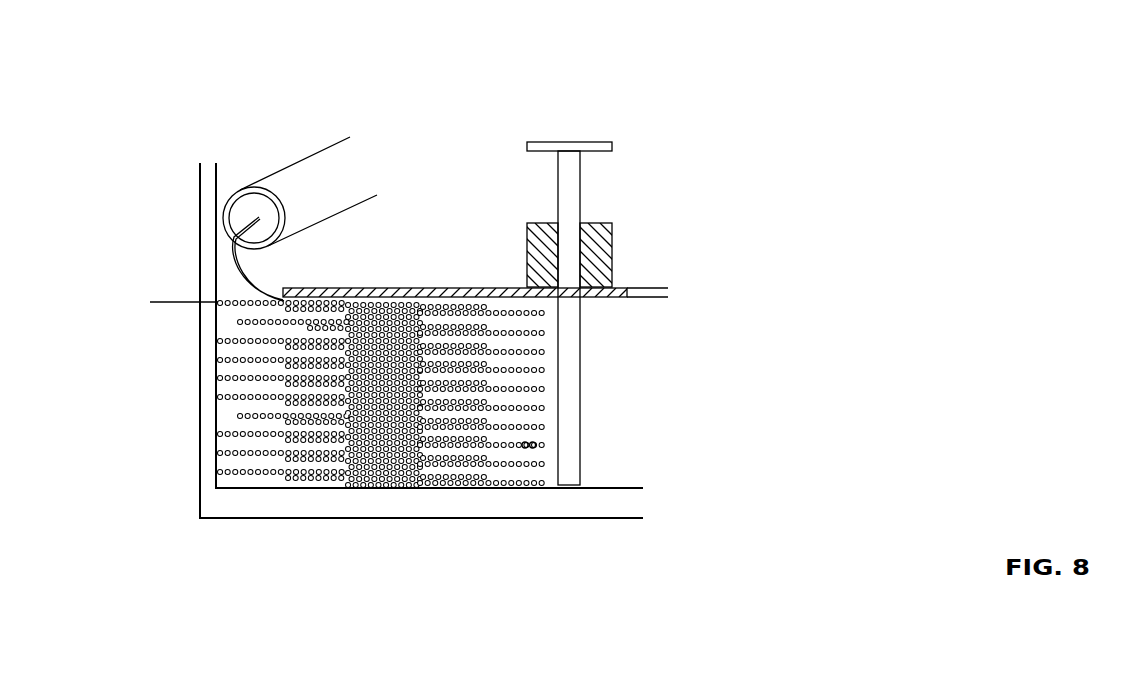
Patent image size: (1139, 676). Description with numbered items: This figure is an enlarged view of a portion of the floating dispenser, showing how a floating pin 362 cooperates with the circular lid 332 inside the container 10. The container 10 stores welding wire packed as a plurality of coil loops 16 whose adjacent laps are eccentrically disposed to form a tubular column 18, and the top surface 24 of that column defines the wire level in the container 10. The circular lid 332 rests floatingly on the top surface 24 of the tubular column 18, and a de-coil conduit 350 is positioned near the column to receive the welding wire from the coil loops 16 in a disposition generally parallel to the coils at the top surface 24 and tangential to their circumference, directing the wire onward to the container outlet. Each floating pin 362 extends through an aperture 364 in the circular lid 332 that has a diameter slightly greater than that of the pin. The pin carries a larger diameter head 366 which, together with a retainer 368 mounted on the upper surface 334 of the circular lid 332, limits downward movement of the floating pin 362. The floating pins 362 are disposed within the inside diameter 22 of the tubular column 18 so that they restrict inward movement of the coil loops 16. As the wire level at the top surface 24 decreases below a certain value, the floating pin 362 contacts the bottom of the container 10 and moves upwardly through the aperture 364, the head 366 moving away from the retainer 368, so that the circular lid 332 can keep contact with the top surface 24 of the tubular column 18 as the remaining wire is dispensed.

The container 10 is at (193, 481).
The coil loops 16 is at (525, 450).
The tubular column 18 is at (225, 386).
The inside diameter 22 is at (548, 352).
The top surface 24 is at (188, 302).
The circular lid 332 is at (393, 277).
The upper surface 334 is at (625, 288).
The de-coil conduit 350 is at (298, 148).
The floating pin 362 is at (573, 160).
The aperture 364 is at (512, 288).
The head 366 is at (541, 141).
The retainer 368 is at (612, 240).